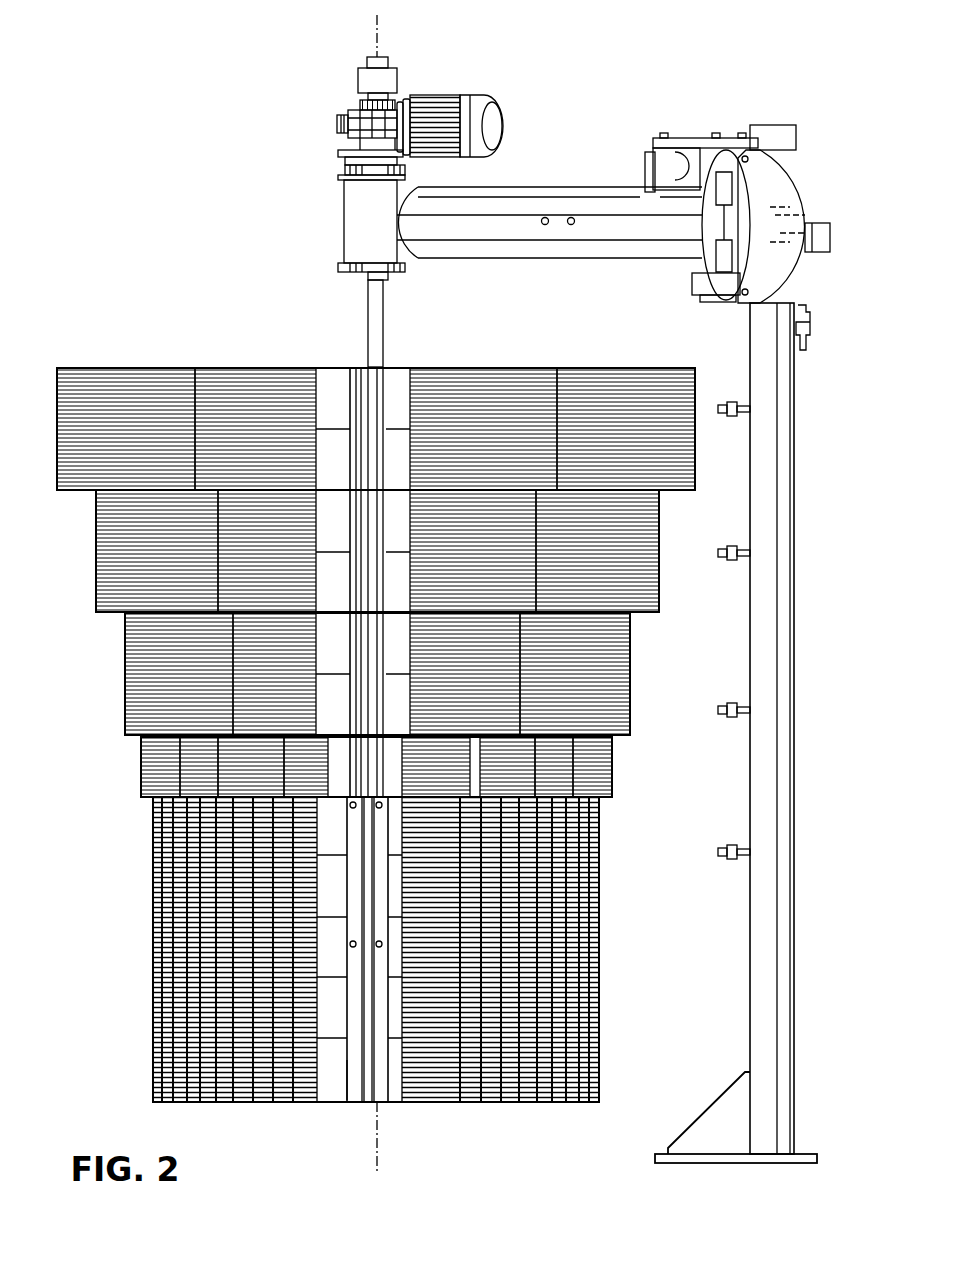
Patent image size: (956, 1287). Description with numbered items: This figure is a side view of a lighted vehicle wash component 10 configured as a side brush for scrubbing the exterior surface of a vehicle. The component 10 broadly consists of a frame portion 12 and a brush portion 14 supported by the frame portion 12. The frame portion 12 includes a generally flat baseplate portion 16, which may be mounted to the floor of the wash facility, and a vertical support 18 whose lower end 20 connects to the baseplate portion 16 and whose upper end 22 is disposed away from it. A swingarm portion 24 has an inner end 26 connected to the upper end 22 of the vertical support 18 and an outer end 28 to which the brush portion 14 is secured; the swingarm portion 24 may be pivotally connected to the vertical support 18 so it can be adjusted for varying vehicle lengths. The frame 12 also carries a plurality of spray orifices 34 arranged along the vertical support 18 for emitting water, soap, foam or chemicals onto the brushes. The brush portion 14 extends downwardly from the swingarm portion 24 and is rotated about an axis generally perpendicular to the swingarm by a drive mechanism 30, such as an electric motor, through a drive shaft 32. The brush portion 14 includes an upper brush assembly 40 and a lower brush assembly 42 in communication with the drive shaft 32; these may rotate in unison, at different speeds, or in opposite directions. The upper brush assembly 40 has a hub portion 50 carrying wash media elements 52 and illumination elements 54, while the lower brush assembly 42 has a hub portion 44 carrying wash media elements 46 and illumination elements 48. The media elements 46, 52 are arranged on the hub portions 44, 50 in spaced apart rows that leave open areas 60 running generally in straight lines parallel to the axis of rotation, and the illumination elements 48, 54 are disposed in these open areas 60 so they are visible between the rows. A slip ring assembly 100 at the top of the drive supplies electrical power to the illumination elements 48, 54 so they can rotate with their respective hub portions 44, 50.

The lighted vehicle wash component 10 is at (540, 117).
The slip ring assembly 100 is at (403, 67).
The frame portion 12 is at (807, 602).
The brush portion 14 is at (184, 347).
The baseplate portion 16 is at (706, 1146).
The vertical support 18 is at (784, 766).
The lower end 20 is at (783, 1138).
The upper end 22 is at (784, 143).
The swingarm portion 24 is at (581, 187).
The inner end 26 is at (694, 204).
The outer end 28 is at (418, 203).
The drive mechanism 30 is at (477, 104).
The drive shaft 32 is at (371, 345).
The spray orifices 34 is at (743, 408).
The upper brush assembly 40 is at (103, 655).
The lower brush assembly 42 is at (124, 931).
The hub portion 44 is at (382, 1094).
The wash media elements 46 is at (596, 1060).
The illumination elements 48 is at (371, 921).
The hub portion 50 is at (382, 381).
The wash media elements 52 is at (614, 380).
The illumination elements 54 is at (363, 402).
The open areas 60 is at (462, 437).